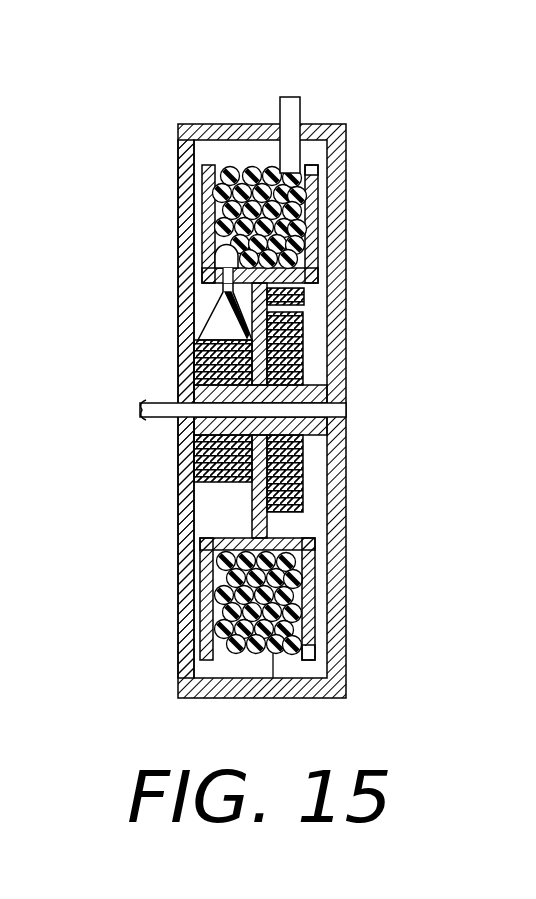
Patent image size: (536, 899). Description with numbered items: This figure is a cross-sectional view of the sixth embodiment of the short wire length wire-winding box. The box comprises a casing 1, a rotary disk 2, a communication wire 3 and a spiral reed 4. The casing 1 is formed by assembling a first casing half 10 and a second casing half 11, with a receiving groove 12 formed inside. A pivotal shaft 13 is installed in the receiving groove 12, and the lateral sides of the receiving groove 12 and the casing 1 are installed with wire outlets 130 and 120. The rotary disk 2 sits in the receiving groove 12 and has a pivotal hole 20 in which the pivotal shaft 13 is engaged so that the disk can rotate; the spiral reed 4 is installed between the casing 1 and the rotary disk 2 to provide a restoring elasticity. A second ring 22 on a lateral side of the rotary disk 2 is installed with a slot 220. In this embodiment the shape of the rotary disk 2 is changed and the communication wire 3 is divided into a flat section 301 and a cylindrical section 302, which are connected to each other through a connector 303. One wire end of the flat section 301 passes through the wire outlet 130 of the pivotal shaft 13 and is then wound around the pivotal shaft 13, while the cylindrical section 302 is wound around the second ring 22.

The casing 1 is at (173, 142).
The first casing half 10 is at (345, 140).
The second casing half 11 is at (180, 275).
The rotary disk 2 is at (313, 243).
The second ring 22 is at (300, 273).
The cylindrical section 302 is at (247, 170).
The wire outlet 120 is at (315, 122).
The connector 303 is at (222, 250).
The slot 220 is at (197, 298).
The receiving groove 12 is at (302, 333).
The pivotal shaft 13 is at (347, 397).
The flat section 301 is at (183, 370).
The wire outlet 130 is at (177, 443).
The pivotal hole 20 is at (347, 447).
The communication wire 3 is at (230, 497).
The spiral reed 4 is at (302, 508).